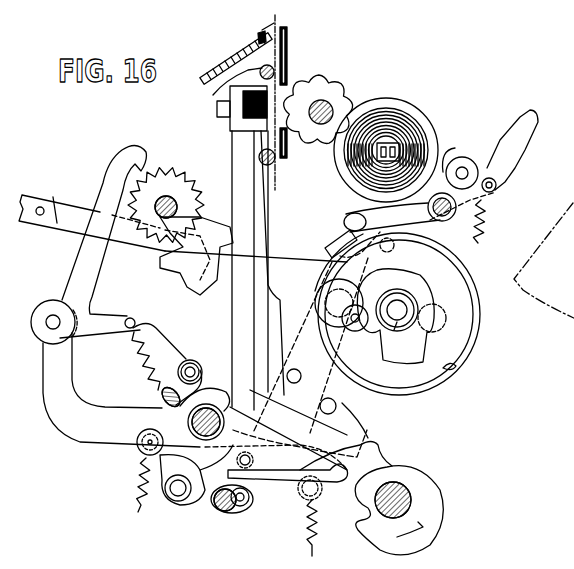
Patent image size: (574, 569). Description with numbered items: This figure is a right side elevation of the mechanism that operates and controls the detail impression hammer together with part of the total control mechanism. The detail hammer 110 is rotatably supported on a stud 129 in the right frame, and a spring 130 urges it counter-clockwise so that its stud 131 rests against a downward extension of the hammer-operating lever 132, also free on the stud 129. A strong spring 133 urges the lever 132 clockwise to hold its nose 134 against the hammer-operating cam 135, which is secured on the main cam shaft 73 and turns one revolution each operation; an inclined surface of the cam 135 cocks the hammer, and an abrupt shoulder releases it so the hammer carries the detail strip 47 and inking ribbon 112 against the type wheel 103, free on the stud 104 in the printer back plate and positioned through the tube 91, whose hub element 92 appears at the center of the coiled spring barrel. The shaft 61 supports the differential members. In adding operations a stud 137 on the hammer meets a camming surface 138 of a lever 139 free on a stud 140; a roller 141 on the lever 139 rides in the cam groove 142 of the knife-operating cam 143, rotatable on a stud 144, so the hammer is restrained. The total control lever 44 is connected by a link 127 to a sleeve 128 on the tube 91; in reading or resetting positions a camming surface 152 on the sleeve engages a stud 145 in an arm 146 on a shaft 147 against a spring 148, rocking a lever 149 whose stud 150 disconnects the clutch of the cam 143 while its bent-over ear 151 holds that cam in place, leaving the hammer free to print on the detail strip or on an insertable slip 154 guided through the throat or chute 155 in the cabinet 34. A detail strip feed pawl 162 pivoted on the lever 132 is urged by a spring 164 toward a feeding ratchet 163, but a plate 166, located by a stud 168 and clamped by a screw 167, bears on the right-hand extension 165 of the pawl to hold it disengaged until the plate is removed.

The cabinet 34 is at (215, 73).
The total control lever 44 is at (50, 206).
The detail strip 47 is at (228, 76).
The shaft 61 is at (322, 297).
The main cam shaft 73 is at (410, 497).
The tube 91 is at (395, 113).
The spring hub 92 is at (394, 149).
The type wheel 103 is at (305, 82).
The stud 104 is at (341, 88).
The detail hammer 110 is at (236, 146).
The inking ribbon 112 is at (285, 143).
The link 127 is at (467, 262).
The sleeve 128 is at (443, 146).
The stud 129 is at (188, 424).
The spring 130 is at (140, 466).
The stud 131 is at (175, 495).
The hammer-operating lever 132 is at (283, 482).
The spring 133 is at (307, 532).
The nose 134 is at (400, 466).
The hammer-operating cam 135 is at (433, 535).
The stud 137 is at (238, 509).
The camming surface 138 is at (182, 492).
The lever 139 is at (323, 366).
The stud 140 is at (320, 404).
The roller 141 is at (342, 333).
The cam groove 142 is at (456, 366).
The knife-operating cam 143 is at (470, 357).
The stud 144 is at (394, 330).
The stud 145 is at (358, 218).
The arm 146 is at (478, 287).
The shaft 147 is at (462, 238).
The spring 148 is at (486, 208).
The lever 149 is at (513, 164).
The stud 150 is at (372, 295).
The bent-over ear 151 is at (335, 246).
The camming surface 152 is at (392, 247).
The insertable slip 154 is at (272, 22).
The throat or chute 155 is at (259, 39).
The detail strip feed pawl 162 is at (80, 266).
The feeding ratchet 163 is at (185, 177).
The spring 164 is at (183, 348).
The right-hand extension 165 is at (124, 319).
The plate 166 is at (132, 363).
The screw 167 is at (163, 395).
The stud 168 is at (200, 352).